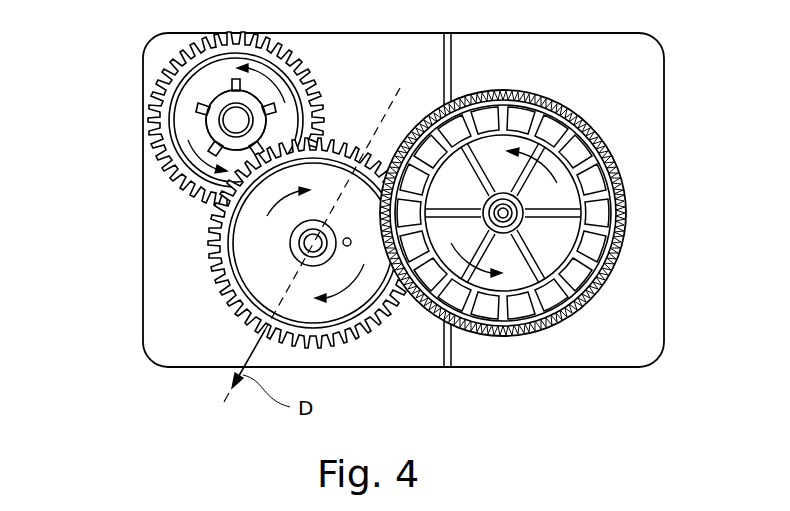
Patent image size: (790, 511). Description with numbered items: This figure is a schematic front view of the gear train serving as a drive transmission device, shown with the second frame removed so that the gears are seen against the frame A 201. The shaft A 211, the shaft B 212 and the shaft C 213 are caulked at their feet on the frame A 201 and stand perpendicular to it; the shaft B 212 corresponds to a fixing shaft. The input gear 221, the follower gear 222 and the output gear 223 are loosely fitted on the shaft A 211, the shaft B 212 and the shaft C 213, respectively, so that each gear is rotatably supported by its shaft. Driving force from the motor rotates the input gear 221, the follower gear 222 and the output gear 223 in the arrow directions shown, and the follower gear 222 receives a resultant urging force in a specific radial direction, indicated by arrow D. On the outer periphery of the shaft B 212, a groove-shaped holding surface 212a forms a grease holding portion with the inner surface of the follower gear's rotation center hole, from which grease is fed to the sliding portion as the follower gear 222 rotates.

The frame A 201 is at (628, 85).
The output gear 223 is at (200, 85).
The shaft C 213 is at (242, 123).
The follower gear 222 is at (262, 276).
The shaft B 212 is at (320, 243).
The holding surface 212a is at (311, 248).
The input gear 221 is at (558, 240).
The shaft A 211 is at (513, 225).